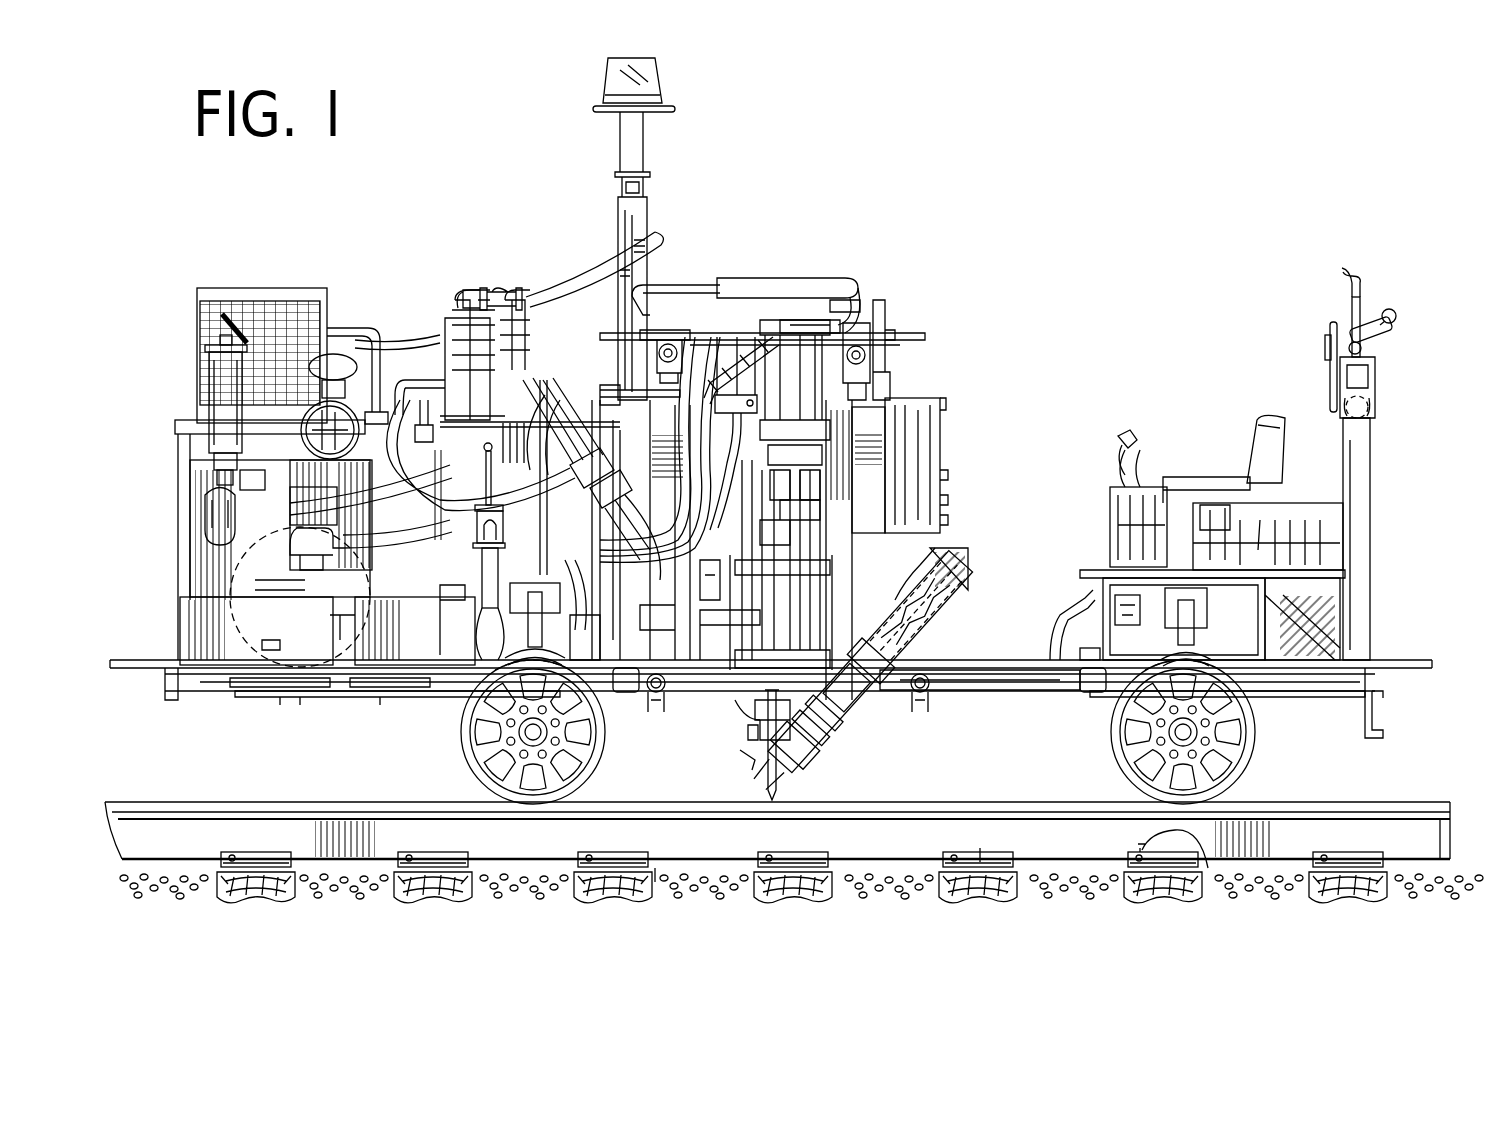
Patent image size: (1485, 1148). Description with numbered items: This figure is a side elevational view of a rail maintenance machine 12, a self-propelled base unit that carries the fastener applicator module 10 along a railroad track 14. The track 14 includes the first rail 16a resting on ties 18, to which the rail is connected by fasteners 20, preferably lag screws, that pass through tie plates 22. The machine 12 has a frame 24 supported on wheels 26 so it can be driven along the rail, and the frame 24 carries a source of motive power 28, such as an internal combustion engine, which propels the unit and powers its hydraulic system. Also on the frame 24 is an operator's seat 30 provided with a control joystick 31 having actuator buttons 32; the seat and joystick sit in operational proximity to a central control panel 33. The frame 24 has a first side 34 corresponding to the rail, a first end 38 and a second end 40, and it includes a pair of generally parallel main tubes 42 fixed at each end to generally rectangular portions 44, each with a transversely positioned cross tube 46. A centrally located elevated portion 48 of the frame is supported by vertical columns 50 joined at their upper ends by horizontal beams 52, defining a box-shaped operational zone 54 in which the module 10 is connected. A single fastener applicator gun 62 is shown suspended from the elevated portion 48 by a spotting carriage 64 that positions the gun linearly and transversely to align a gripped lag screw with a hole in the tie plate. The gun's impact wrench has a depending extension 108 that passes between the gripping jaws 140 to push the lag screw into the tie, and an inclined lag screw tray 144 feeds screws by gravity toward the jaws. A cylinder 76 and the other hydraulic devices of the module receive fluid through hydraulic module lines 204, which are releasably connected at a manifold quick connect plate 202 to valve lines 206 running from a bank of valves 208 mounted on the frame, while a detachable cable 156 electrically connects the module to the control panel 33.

The fastener applicator module 10 is at (795, 272).
The railway maintenance machine 12 is at (290, 258).
The railroad track 14 is at (1392, 805).
The first rail 16a is at (1445, 835).
The ties 18 is at (300, 893).
The fasteners 20 is at (790, 785).
The tie plates 22 is at (660, 894).
The frame 24 is at (1385, 685).
The wheels 26 is at (460, 737).
The source of motive power 28 is at (198, 563).
The operator's seat 30 is at (1276, 420).
The control joystick 31 is at (1118, 430).
The actuator buttons 32 is at (1135, 438).
The central control panel 33 is at (925, 398).
The first side 34 is at (688, 695).
The first end 38 is at (1370, 655).
The second end 40 is at (148, 663).
The main tubes 42 is at (892, 692).
The rectangular portions 44 is at (368, 697).
The cross tube 46 is at (624, 695).
The elevated portion 48 is at (880, 375).
The vertical columns 50 is at (872, 415).
The horizontal beams 52 is at (700, 395).
The operational zone 54 is at (845, 478).
The fastener applicator unit 62 is at (842, 525).
The spotting carriage 64 is at (838, 275).
The cylinder 76 is at (748, 288).
The extension 108 is at (900, 595).
The gripping jaws 140 is at (750, 738).
The lag screw tray 144 is at (930, 622).
The detachable cable 156 is at (930, 562).
The manifold quick connect plate 202 is at (607, 470).
The hydraulic module lines 204 is at (590, 580).
The valve lines 206 is at (550, 372).
The bank of valves 208 is at (448, 320).